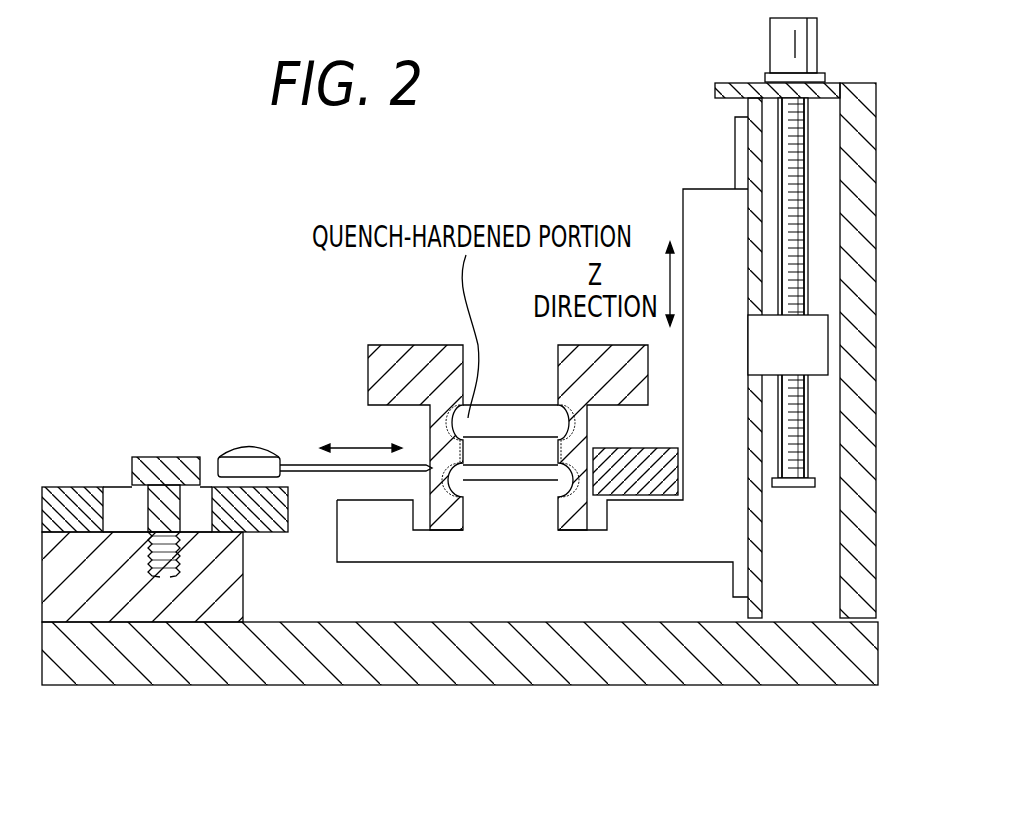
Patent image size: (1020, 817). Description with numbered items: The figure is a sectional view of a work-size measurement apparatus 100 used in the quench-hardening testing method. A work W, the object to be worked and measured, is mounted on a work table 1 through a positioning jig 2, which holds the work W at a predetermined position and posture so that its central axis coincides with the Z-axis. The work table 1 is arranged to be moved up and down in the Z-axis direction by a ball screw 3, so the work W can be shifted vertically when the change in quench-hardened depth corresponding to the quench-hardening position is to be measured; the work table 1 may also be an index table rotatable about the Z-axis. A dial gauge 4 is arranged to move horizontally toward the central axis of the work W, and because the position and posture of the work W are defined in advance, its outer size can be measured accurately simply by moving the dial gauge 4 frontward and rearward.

The work table 1 is at (500, 546).
The positioning jig 2 is at (664, 462).
The ball screw 3 is at (785, 115).
The dial gauge 4 is at (262, 462).
The work-size measurement apparatus 100 is at (380, 692).
The work W is at (397, 355).